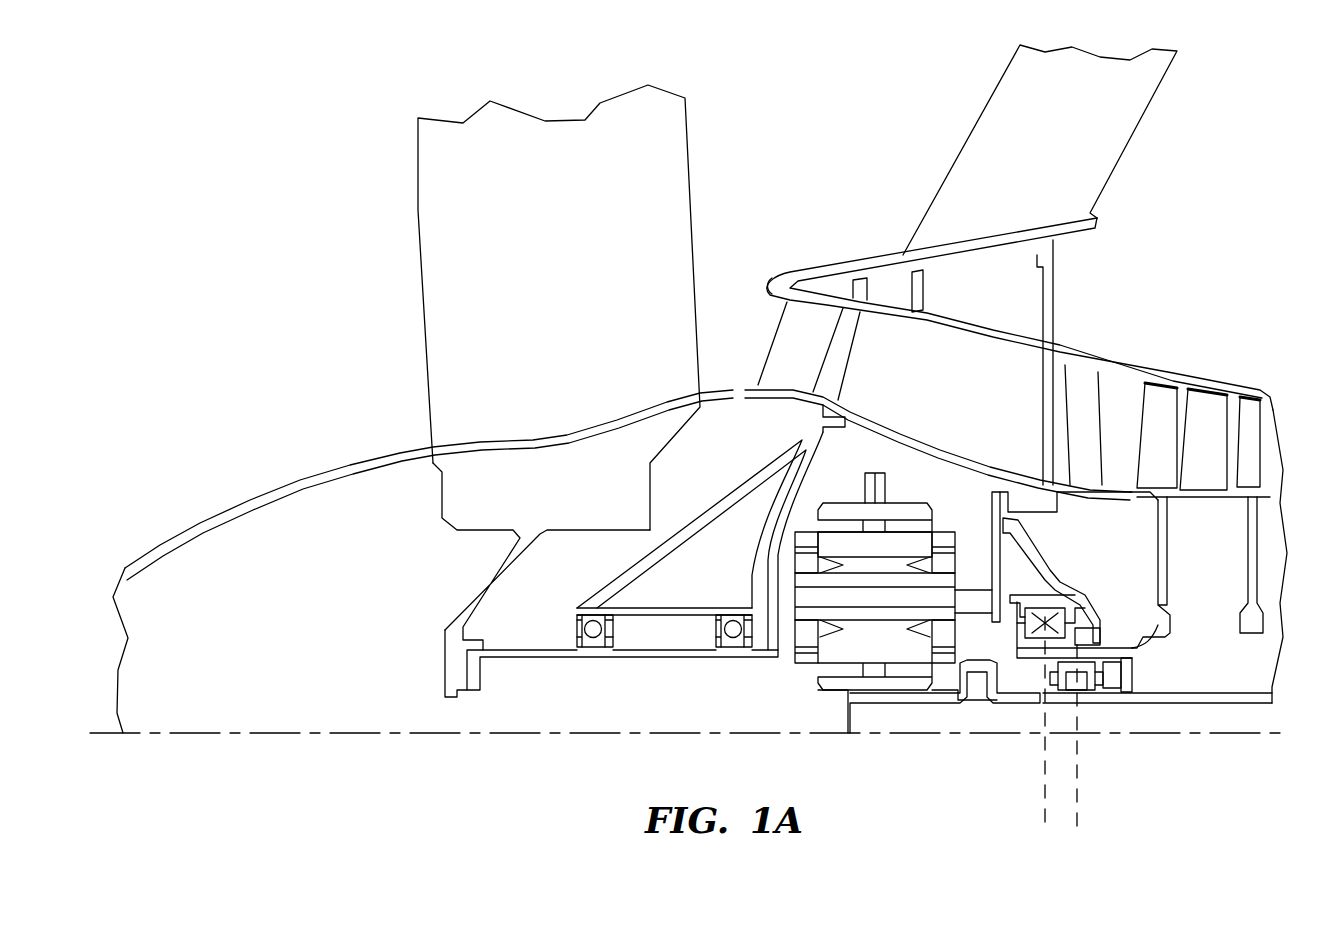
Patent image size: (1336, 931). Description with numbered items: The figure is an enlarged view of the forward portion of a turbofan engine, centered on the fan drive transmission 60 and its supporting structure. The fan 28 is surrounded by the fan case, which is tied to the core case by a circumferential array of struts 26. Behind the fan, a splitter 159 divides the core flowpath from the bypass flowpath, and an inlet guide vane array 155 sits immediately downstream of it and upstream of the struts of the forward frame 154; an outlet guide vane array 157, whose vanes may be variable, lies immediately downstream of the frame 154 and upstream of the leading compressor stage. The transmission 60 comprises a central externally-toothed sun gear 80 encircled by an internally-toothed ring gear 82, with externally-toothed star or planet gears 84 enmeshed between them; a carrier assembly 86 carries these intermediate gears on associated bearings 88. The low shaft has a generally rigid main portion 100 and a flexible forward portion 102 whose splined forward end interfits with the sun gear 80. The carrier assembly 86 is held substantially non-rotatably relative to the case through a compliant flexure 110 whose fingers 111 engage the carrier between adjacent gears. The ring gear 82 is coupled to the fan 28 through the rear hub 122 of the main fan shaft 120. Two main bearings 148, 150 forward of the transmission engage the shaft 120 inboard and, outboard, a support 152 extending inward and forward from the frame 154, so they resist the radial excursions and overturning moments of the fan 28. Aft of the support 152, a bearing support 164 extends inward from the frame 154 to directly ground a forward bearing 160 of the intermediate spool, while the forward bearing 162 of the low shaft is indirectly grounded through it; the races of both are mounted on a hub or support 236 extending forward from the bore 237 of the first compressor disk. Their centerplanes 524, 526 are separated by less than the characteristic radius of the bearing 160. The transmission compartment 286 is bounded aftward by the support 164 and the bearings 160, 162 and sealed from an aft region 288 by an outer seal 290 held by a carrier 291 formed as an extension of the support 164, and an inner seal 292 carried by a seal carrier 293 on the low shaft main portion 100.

The struts 26 is at (1082, 130).
The fan 28 is at (642, 236).
The transmission 60 is at (797, 690).
The sun gear 80 is at (832, 692).
The ring gear 82 is at (908, 511).
The star or planet gears 84 is at (828, 655).
The carrier assembly 86 is at (790, 667).
The bearings 88 is at (803, 620).
The main portion of low shaft 100 is at (1250, 704).
The flexible forward portion of low shaft 102 is at (942, 710).
The compliant flexure 110 is at (993, 563).
The fingers 111 is at (974, 655).
The main fan shaft 120 is at (543, 670).
The rear hub 122 is at (793, 530).
The main bearing 148 is at (591, 650).
The main bearing 150 is at (735, 650).
The support 152 is at (704, 503).
The forward frame 154 is at (978, 381).
The inlet guide vane array 155 is at (820, 322).
The outlet guide vane array 157 is at (1078, 407).
The splitter 159 is at (760, 282).
The forward bearing of intermediate spool 160 is at (1050, 613).
The forward bearing of low shaft 162 is at (1084, 690).
The bearing support 164 is at (1058, 567).
The hub or support 236 is at (1105, 662).
The bore 237 is at (1163, 620).
The transmission compartment 286 is at (977, 512).
The region 288 is at (1146, 527).
The outer seal 290 is at (1085, 637).
The carrier 291 is at (1107, 630).
The inner seal 292 is at (1108, 672).
The seal carrier 293 is at (1127, 687).
The centerplane 524 is at (1043, 817).
The centerplane 526 is at (1078, 813).